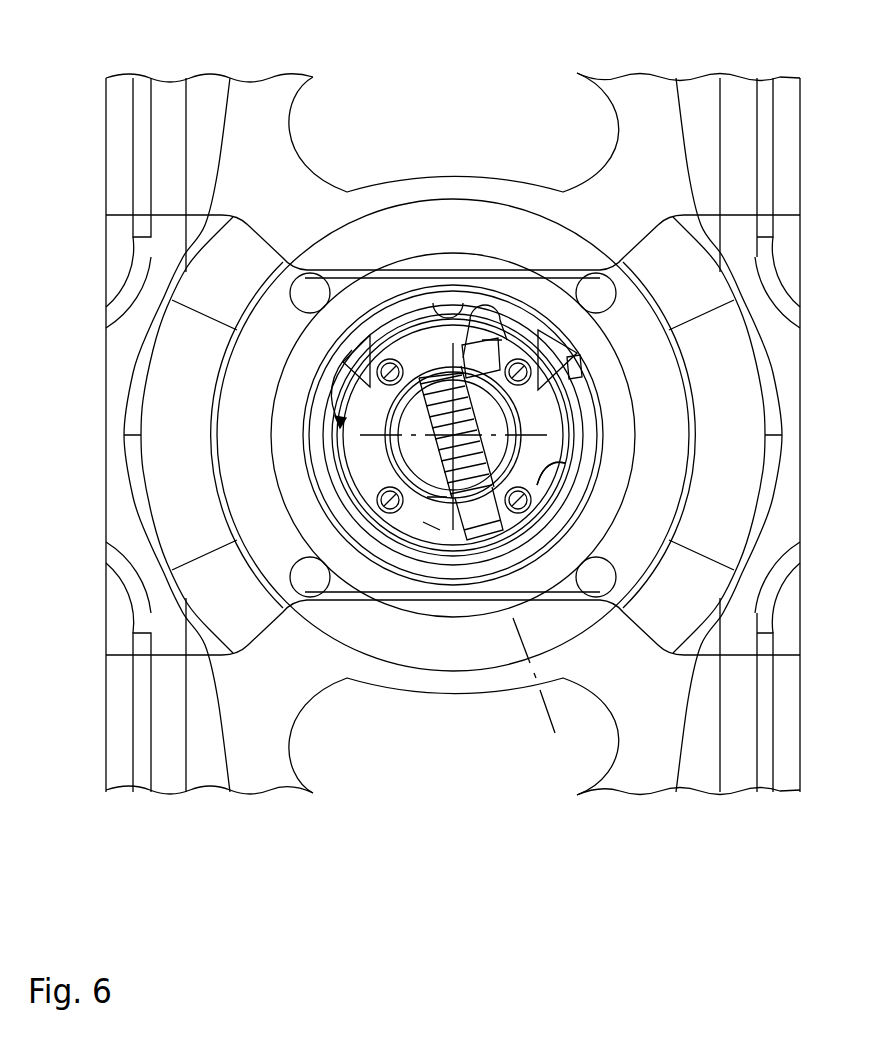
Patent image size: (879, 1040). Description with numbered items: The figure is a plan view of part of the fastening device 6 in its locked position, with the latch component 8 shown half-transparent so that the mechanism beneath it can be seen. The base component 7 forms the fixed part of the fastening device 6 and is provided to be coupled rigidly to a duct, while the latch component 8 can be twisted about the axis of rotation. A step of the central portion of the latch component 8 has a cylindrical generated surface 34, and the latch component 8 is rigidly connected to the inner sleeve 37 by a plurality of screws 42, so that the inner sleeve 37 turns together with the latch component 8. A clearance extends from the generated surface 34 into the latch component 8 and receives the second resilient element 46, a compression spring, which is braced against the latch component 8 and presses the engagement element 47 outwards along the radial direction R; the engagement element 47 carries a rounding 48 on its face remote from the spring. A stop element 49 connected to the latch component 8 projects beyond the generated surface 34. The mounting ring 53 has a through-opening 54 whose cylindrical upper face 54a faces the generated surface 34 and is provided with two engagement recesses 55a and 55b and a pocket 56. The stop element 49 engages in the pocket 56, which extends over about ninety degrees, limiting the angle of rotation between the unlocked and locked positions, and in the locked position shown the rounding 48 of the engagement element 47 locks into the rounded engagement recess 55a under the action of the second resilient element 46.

The fastening device 6 is at (389, 832).
The base component 7 is at (258, 93).
The latch component 8 is at (248, 628).
The cylindrical generated surface 34 is at (570, 440).
The inner sleeve 37 is at (425, 523).
The screws 42 is at (393, 512).
The second resilient element 46 is at (430, 367).
The engagement element 47 is at (453, 523).
The rounding 48 is at (468, 512).
The stop element 49 is at (483, 340).
The mounting ring 53 is at (538, 532).
The through-opening 54 is at (539, 483).
The cylindrical upper face 54a is at (539, 483).
The engagement recess 55a is at (500, 540).
The engagement recess 55b is at (575, 383).
The pocket 56 is at (462, 368).
The radial direction R is at (547, 708).